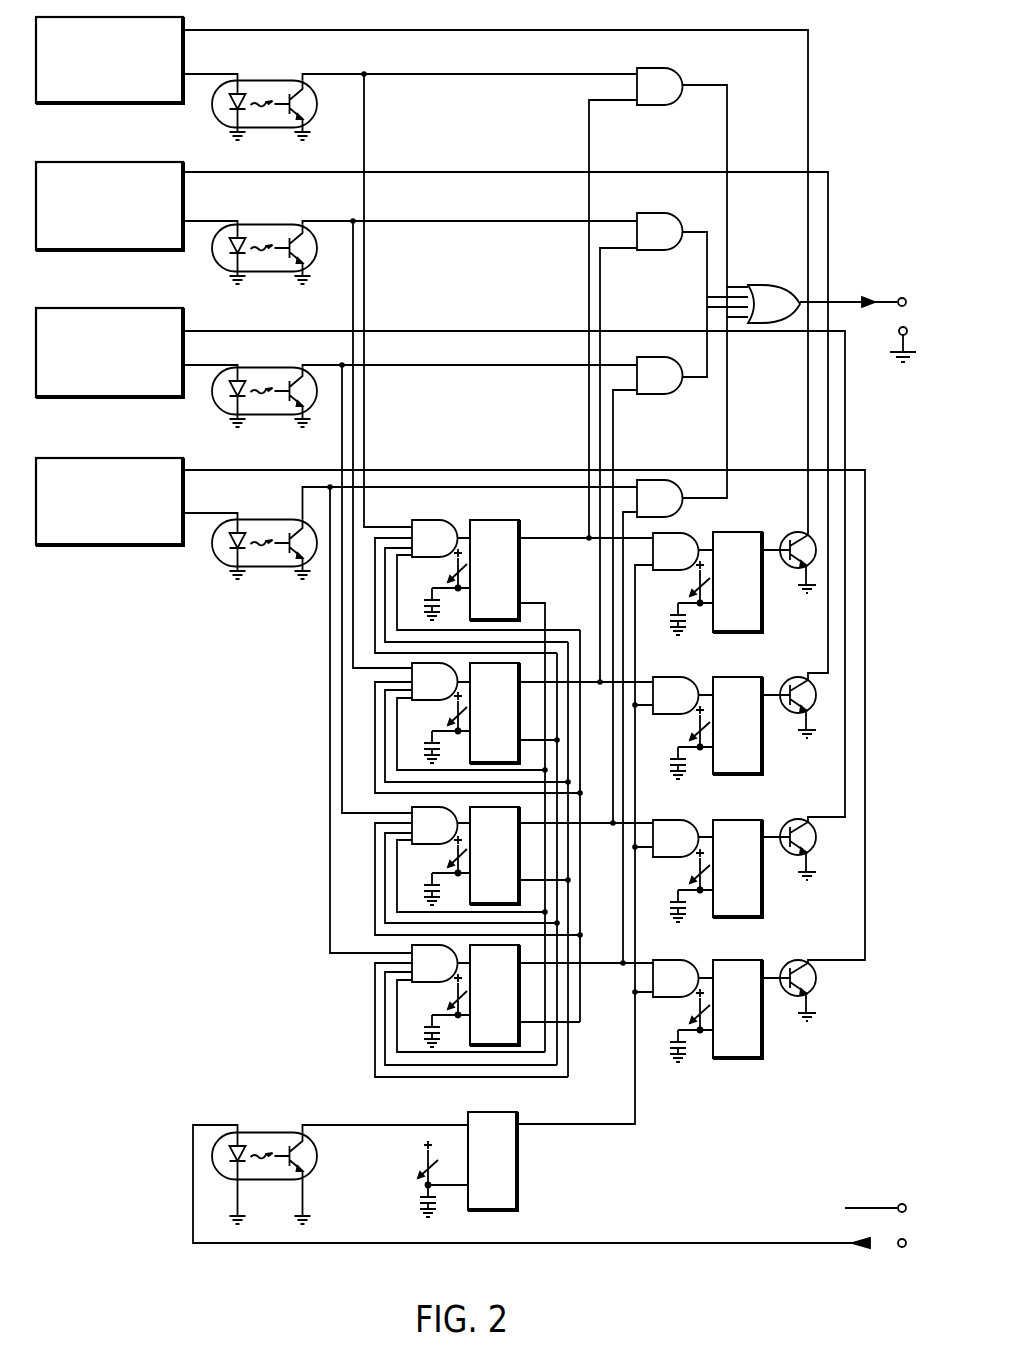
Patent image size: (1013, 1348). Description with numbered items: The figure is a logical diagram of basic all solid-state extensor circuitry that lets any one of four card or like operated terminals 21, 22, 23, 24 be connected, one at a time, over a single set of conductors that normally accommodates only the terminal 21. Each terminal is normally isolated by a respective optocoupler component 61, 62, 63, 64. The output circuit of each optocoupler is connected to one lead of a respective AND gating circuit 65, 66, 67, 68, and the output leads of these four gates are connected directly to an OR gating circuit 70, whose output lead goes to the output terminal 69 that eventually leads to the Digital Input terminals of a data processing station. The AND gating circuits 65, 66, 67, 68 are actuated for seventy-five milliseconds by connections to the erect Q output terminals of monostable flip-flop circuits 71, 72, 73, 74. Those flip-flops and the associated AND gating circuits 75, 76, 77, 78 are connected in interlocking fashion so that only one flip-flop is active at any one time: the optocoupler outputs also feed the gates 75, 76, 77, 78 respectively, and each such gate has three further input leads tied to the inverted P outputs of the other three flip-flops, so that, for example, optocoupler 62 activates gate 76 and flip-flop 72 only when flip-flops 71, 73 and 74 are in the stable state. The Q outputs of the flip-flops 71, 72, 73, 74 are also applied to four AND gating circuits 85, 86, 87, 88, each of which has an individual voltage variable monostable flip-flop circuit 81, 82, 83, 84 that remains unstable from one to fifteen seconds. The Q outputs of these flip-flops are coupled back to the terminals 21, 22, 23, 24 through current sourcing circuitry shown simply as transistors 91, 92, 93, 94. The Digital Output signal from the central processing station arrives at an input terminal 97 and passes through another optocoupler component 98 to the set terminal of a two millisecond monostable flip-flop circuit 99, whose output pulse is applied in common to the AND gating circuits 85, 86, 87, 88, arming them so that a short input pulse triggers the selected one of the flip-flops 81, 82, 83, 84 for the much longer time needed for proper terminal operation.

The card operated terminal 21 is at (128, 105).
The card operated terminal 22 is at (128, 251).
The card operated terminal 23 is at (128, 398).
The card operated terminal 24 is at (128, 546).
The optocoupler component 61 is at (250, 80).
The optocoupler component 62 is at (250, 224).
The optocoupler component 63 is at (244, 368).
The optocoupler component 64 is at (244, 521).
The AND gating circuit 65 is at (669, 65).
The AND gating circuit 66 is at (669, 213).
The AND gating circuit 67 is at (643, 396).
The AND gating circuit 68 is at (676, 490).
The output terminal 69 is at (902, 289).
The OR gating circuit 70 is at (777, 285).
The monostable flip-flop circuit 71 is at (518, 573).
The monostable flip-flop circuit 72 is at (518, 714).
The monostable flip-flop circuit 73 is at (518, 853).
The monostable flip-flop circuit 74 is at (518, 995).
The AND gating circuit 75 is at (439, 522).
The AND gating circuit 76 is at (445, 700).
The AND gating circuit 77 is at (445, 843).
The AND gating circuit 78 is at (445, 983).
The monostable flip-flop circuit 81 is at (754, 602).
The monostable flip-flop circuit 82 is at (756, 748).
The monostable flip-flop circuit 83 is at (754, 891).
The monostable flip-flop circuit 84 is at (754, 1041).
The AND gating circuit 85 is at (685, 574).
The AND gating circuit 86 is at (682, 675).
The AND gating circuit 87 is at (682, 817).
The AND gating circuit 88 is at (682, 960).
The transistor 91 is at (806, 532).
The transistor 92 is at (782, 680).
The transistor 93 is at (782, 822).
The transistor 94 is at (782, 965).
The input terminal 97 is at (912, 1230).
The optocoupler component 98 is at (264, 1133).
The monostable flip-flop circuit 99 is at (517, 1182).